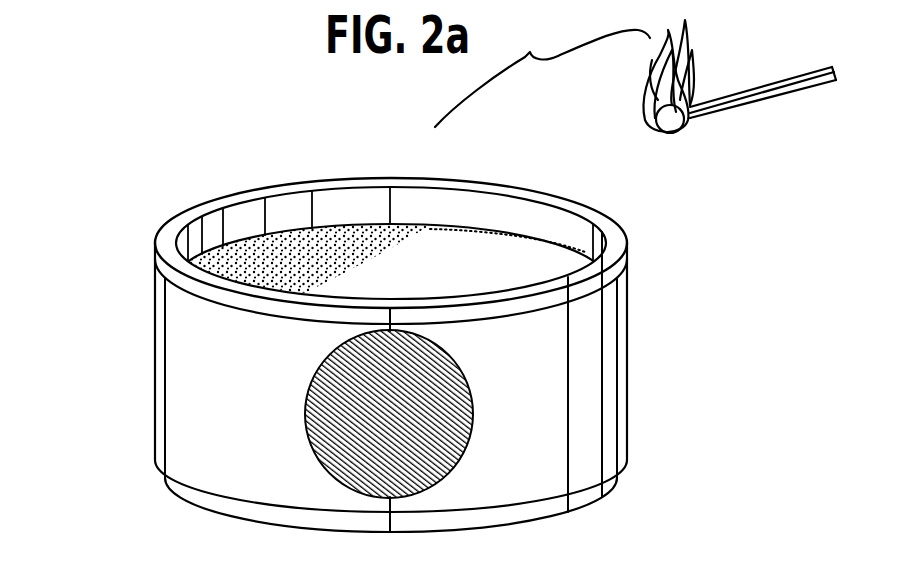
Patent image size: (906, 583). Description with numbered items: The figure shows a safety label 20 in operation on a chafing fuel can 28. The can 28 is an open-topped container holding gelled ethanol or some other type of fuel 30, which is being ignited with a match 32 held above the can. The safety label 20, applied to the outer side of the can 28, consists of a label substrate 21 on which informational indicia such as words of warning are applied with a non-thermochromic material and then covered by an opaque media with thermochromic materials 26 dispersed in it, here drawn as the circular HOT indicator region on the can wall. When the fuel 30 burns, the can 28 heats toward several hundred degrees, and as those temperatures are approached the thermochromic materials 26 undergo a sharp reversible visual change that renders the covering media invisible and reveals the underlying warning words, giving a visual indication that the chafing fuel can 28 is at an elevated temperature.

The safety label 20 is at (170, 405).
The label substrate 21 is at (254, 474).
The thermochromic materials 26 is at (433, 477).
The chafing fuel can 28 is at (170, 238).
The fuel 30 is at (558, 258).
The match 32 is at (795, 87).